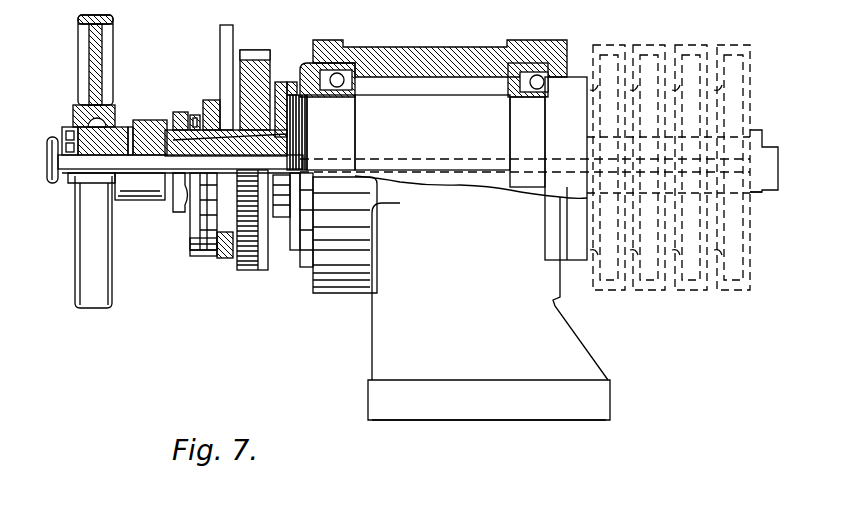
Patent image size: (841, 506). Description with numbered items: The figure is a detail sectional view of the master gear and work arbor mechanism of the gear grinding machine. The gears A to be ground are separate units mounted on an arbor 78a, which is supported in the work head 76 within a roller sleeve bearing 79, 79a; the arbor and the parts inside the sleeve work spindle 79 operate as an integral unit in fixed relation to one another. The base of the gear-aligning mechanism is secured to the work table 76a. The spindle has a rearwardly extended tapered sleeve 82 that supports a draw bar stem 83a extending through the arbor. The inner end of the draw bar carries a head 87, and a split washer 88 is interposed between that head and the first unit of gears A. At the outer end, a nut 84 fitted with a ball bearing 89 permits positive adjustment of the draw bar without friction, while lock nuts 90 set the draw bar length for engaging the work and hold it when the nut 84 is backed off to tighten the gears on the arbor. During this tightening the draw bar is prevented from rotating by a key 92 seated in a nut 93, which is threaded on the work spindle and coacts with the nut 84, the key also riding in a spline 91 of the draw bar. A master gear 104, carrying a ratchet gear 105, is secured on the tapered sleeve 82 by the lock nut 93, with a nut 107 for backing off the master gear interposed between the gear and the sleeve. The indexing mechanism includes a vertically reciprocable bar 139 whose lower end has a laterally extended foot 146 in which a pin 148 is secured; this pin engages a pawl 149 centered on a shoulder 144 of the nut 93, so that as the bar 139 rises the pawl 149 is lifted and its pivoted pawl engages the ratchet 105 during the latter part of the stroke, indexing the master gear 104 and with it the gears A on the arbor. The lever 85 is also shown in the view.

The work head 76 is at (489, 308).
The work table 76a is at (495, 410).
The arbor 78a is at (647, 137).
The sleeve work spindle 79 is at (471, 168).
The roller sleeve bearing 79a is at (340, 68).
The tapered sleeve 82 is at (290, 147).
The draw bar stem 83a is at (380, 157).
The nut 84 is at (128, 200).
The lever 85 is at (80, 233).
The head 87 is at (768, 153).
The split washer 88 is at (760, 203).
The ball bearing 89 is at (62, 134).
The lock nuts 90 is at (48, 152).
The spline 91 is at (140, 186).
The key 92 is at (154, 123).
The nut 93 is at (178, 207).
The master gear 104 is at (270, 252).
The ratchet gear 105 is at (213, 235).
The nut 107 is at (277, 103).
The vertically reciprocable bar 139 is at (227, 33).
The shoulder 144 is at (203, 123).
The foot 146 is at (228, 267).
The pin 148 is at (198, 258).
The pawl 149 is at (195, 215).
The gears A is at (685, 72).